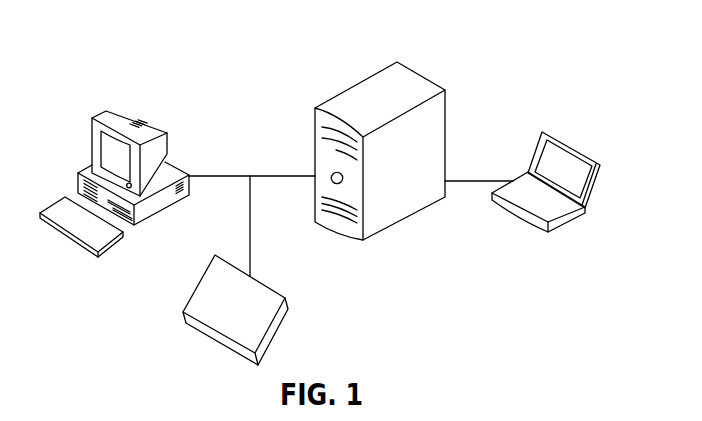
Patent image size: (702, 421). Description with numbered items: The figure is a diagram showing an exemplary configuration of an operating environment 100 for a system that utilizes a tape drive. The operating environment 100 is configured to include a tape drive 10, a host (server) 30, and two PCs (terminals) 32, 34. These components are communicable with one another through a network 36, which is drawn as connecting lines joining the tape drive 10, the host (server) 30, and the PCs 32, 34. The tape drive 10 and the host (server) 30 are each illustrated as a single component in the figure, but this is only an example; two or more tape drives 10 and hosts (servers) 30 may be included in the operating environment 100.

The operating environment 100 is at (303, 40).
The tape drive 10 is at (252, 310).
The host (server) 30 is at (425, 74).
The PC (terminal) 32 is at (147, 120).
The PC (terminal) 34 is at (577, 147).
The network 36 is at (251, 220).